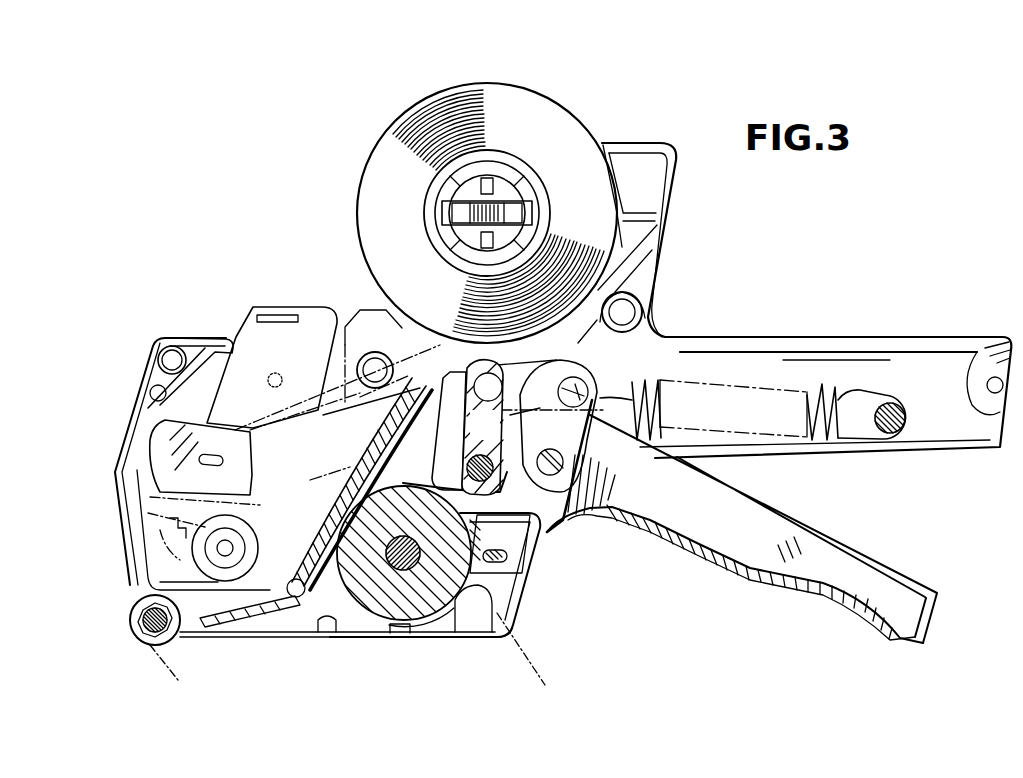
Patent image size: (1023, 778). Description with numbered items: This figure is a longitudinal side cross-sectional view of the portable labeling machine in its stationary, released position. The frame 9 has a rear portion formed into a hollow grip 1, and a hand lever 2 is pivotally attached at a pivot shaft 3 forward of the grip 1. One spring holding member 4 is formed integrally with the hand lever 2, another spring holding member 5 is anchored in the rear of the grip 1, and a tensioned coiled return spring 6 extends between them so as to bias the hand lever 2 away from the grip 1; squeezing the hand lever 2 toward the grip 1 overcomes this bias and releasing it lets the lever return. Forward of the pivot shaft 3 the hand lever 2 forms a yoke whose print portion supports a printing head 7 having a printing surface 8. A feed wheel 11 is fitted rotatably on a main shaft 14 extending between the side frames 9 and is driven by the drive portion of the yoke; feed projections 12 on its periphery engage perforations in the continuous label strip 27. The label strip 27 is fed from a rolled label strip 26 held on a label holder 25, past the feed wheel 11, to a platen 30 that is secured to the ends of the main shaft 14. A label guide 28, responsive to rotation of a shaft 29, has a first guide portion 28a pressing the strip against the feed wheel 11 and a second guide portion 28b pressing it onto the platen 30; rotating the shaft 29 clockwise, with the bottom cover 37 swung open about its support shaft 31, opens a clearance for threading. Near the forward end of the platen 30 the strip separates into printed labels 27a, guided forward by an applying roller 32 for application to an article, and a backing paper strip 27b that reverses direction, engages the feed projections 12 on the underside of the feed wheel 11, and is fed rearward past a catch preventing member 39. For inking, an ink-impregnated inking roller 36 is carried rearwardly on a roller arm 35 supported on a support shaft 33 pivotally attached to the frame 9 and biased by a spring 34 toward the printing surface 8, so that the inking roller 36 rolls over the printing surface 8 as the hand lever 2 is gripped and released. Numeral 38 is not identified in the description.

The hollow grip 1 is at (856, 337).
The hand lever 2 is at (855, 568).
The pivot shaft 3 is at (575, 470).
The spring holding member 4 is at (576, 378).
The spring holding member 5 is at (898, 405).
The return spring 6 is at (745, 380).
The printing head 7 is at (278, 315).
The printing surface 8 is at (226, 494).
The frame 9 is at (228, 338).
The feed wheel 11 is at (376, 607).
The feed projections 12 is at (323, 512).
The main shaft 14 is at (405, 571).
The label holder 25 is at (503, 160).
The rolled label strip 26 is at (512, 84).
The continuous label strip 27 is at (440, 430).
The printed labels 27a is at (179, 676).
The backing paper strip 27b is at (538, 624).
The label guide 28 is at (352, 447).
The first guide portion 28a is at (392, 440).
The second guide portion 28b is at (293, 578).
The shaft 29 is at (483, 455).
The platen 30 is at (306, 628).
The support shaft 31 is at (148, 640).
The applying roller 32 is at (130, 620).
The support shaft 33 is at (172, 346).
The spring 34 is at (150, 380).
The roller arm 35 is at (148, 502).
The inking roller 36 is at (172, 578).
The bottom cover 37 is at (263, 640).
The bottom plate 38 is at (458, 632).
The catch preventing member 39 is at (538, 572).